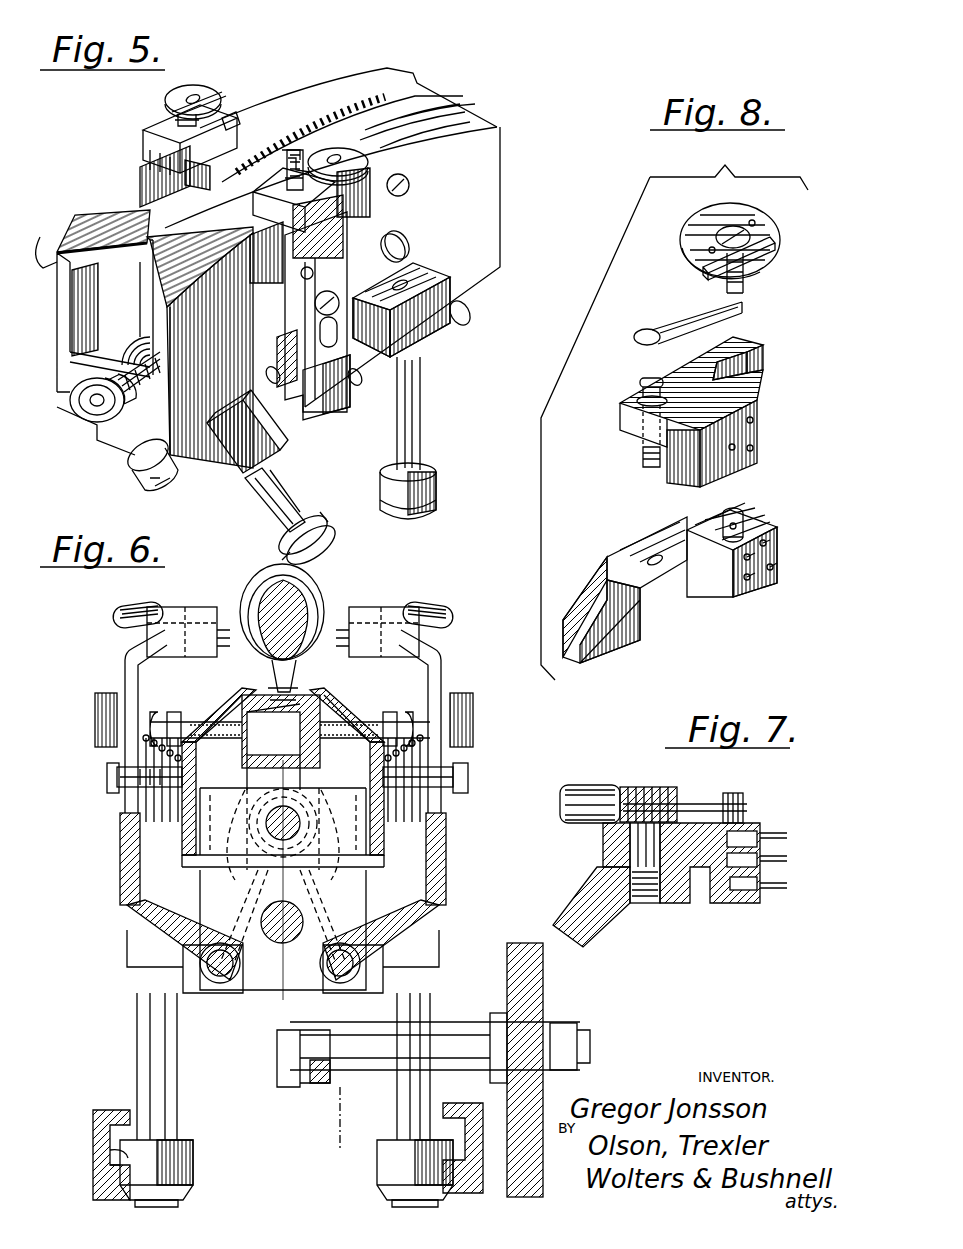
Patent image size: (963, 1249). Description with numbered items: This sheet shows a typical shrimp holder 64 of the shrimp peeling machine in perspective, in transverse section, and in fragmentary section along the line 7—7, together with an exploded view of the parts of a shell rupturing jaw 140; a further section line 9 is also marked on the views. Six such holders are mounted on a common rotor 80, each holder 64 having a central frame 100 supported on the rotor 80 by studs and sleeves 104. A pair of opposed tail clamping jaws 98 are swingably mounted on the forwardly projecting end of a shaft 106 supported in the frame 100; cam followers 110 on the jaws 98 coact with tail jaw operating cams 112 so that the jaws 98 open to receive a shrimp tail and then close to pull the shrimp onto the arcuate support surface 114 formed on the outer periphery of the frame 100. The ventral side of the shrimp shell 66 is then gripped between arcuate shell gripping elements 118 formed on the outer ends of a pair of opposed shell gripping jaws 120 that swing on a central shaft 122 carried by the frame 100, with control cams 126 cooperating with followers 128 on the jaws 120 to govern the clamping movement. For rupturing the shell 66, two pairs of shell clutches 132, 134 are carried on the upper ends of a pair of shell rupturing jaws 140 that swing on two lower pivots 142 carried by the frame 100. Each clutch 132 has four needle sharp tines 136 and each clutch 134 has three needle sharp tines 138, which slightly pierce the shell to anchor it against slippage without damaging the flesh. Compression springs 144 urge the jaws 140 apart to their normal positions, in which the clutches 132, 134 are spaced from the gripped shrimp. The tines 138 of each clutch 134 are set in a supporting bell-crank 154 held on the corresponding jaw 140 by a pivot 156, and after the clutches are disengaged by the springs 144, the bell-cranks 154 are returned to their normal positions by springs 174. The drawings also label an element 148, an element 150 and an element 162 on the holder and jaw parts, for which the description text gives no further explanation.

In FIG. 5, the section line 7— 7 is at (147, 103).
In FIG. 5, the section line 9- 9 is at (277, 523).
In FIG. 6, the section line 9- 9 is at (314, 1113).
In FIG. 5, the shrimp holder 64 is at (507, 200).
In FIG. 6, the shrimp holder 64 is at (113, 879).
In FIG. 6, the shrimp shell 66 is at (300, 588).
In FIG. 6, the rotor 80 is at (535, 1001).
In FIG. 5, the tail clamping jaws 98 is at (163, 417).
In FIG. 6, the central frame 100 is at (293, 987).
In FIG. 6, the sleeves 104 is at (367, 1073).
In FIG. 5, the shaft 106 is at (90, 408).
In FIG. 6, the shaft 106 is at (280, 936).
In FIG. 5, the cam followers 110 is at (173, 467).
In FIG. 6, the tail jaw operating cams 112 is at (130, 1110).
In FIG. 6, the arcuate support surface 114 is at (340, 670).
In FIG. 5, the shell gripping elements 118 is at (390, 74).
In FIG. 6, the shell gripping elements 118 is at (217, 693).
In FIG. 5, the shell gripping jaws 120 is at (487, 248).
In FIG. 6, the shell gripping jaws 120 is at (130, 687).
In FIG. 6, the central shaft 122 is at (283, 880).
In FIG. 6, the control cams 126 is at (130, 1153).
In FIG. 5, the followers 128 is at (390, 494).
In FIG. 6, the followers 128 is at (170, 1170).
In FIG. 5, the shell clutch 132 is at (237, 137).
In FIG. 8, the shell clutch 132 is at (757, 545).
In FIG. 5, the shell clutch 134 is at (140, 173).
In FIG. 8, the shell clutch 134 is at (757, 424).
In FIG. 6, the shell clutch 134 is at (227, 617).
In FIG. 8, the tines 136 is at (783, 567).
In FIG. 8, the tines 138 is at (757, 454).
In FIG. 5, the shell rupturing jaws 140 is at (320, 380).
In FIG. 8, the shell rupturing jaws 140 is at (630, 630).
In FIG. 7, the shell rupturing jaws 140 is at (600, 927).
In FIG. 6, the shell rupturing jaws 140 is at (120, 836).
In FIG. 6, the lower pivots 142 is at (220, 980).
In FIG. 5, the compression springs 144 is at (292, 318).
In FIG. 6, the compression springs 144 is at (132, 848).
In FIG. 5, the adjusting screw 148 is at (340, 262).
In FIG. 6, the adjusting screw 148 is at (90, 731).
In FIG. 8, the block 150 is at (737, 590).
In FIG. 5, the bell-crank 154 is at (185, 160).
In FIG. 8, the bell-crank 154 is at (687, 474).
In FIG. 7, the bell-crank 154 is at (733, 897).
In FIG. 8, the pivot 156 is at (640, 400).
In FIG. 7, the pivot 156 is at (630, 851).
In FIG. 6, the pivot 156 is at (167, 610).
In FIG. 5, the knob 162 is at (203, 90).
In FIG. 8, the knob 162 is at (703, 223).
In FIG. 7, the knob 162 is at (560, 790).
In FIG. 8, the springs 174 is at (663, 327).
In FIG. 7, the springs 174 is at (697, 803).